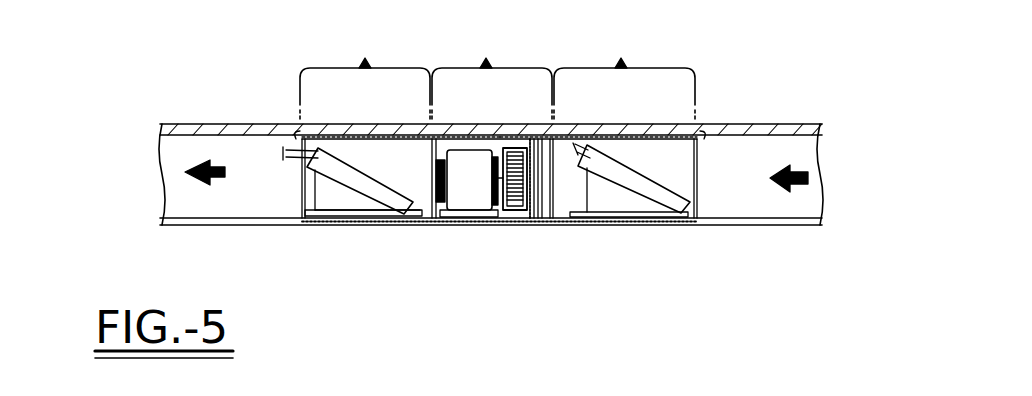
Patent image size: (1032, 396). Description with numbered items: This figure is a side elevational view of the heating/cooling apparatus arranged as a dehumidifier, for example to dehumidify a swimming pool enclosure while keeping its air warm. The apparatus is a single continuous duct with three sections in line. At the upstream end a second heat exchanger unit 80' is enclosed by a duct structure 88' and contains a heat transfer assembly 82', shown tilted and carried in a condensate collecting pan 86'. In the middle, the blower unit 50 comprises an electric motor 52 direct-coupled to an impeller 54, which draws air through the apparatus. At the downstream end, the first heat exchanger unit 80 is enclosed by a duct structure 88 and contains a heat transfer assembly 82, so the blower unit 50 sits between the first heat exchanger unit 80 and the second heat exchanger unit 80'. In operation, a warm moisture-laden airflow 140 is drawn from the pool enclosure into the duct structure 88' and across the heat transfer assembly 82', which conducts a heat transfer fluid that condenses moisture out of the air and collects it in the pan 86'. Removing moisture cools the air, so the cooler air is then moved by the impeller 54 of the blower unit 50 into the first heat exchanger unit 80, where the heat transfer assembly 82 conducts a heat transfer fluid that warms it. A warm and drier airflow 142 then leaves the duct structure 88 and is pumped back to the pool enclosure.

The blower unit 50 is at (492, 123).
The electric motor 52 is at (473, 205).
The impeller 54 is at (513, 211).
The first heat exchanger unit 80 is at (368, 123).
The second heat exchanger unit 80' is at (625, 123).
The heat transfer assembly 82 is at (352, 208).
The heat transfer assembly 82' is at (648, 209).
The condensate collecting pan 86' is at (629, 243).
The duct structure 88 is at (361, 111).
The duct structure 88' is at (641, 113).
The warm moisture-laden airflow 140 is at (808, 178).
The warm and drier airflow 142 is at (222, 180).